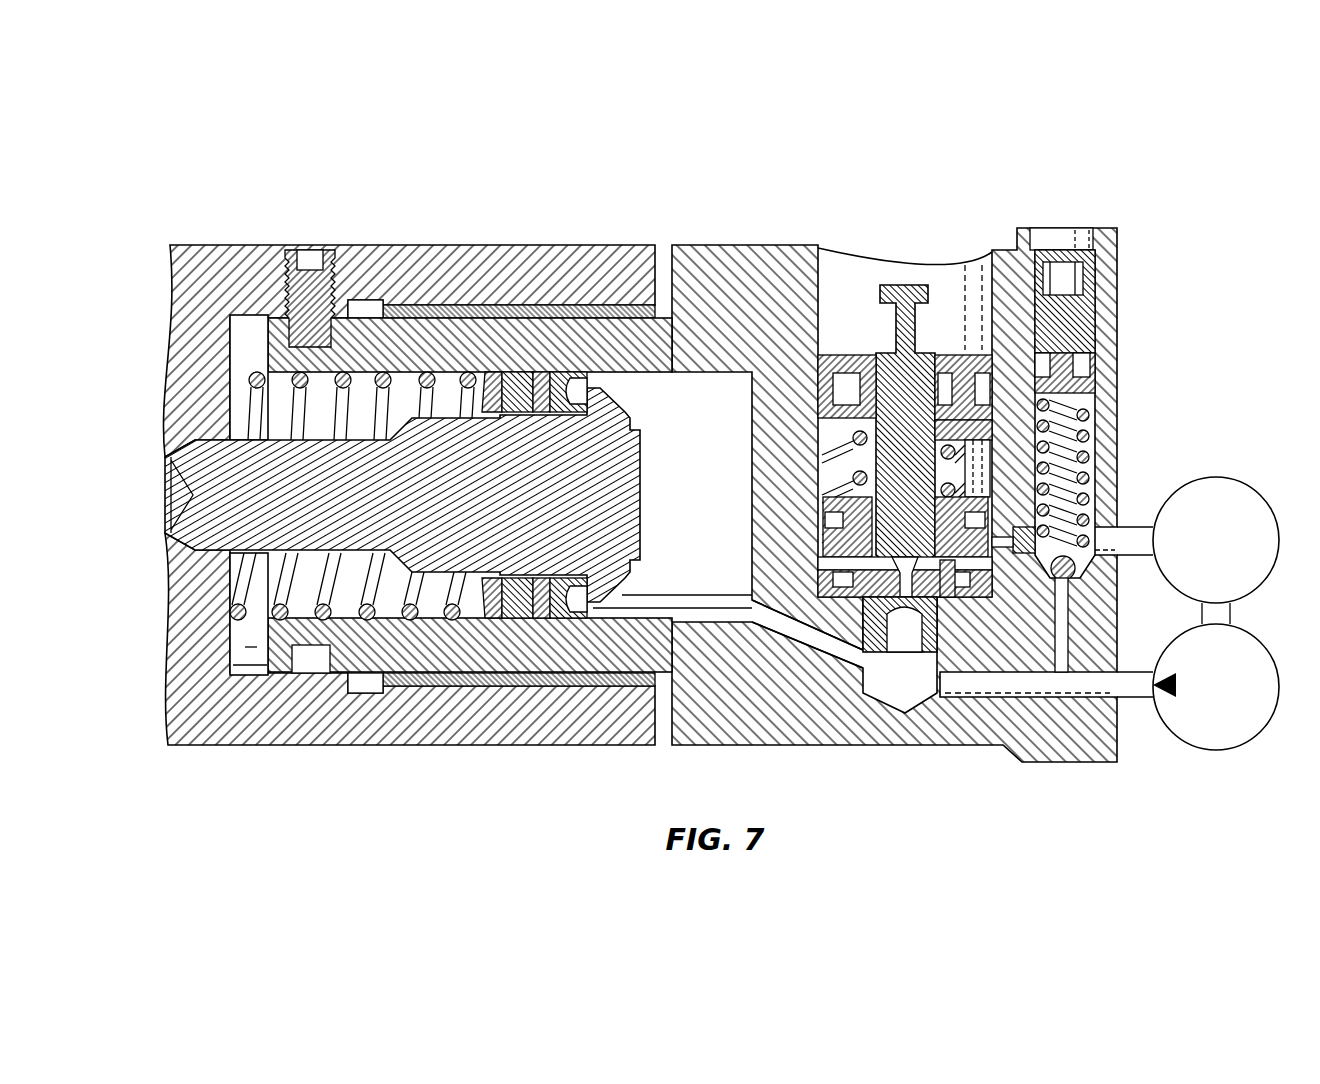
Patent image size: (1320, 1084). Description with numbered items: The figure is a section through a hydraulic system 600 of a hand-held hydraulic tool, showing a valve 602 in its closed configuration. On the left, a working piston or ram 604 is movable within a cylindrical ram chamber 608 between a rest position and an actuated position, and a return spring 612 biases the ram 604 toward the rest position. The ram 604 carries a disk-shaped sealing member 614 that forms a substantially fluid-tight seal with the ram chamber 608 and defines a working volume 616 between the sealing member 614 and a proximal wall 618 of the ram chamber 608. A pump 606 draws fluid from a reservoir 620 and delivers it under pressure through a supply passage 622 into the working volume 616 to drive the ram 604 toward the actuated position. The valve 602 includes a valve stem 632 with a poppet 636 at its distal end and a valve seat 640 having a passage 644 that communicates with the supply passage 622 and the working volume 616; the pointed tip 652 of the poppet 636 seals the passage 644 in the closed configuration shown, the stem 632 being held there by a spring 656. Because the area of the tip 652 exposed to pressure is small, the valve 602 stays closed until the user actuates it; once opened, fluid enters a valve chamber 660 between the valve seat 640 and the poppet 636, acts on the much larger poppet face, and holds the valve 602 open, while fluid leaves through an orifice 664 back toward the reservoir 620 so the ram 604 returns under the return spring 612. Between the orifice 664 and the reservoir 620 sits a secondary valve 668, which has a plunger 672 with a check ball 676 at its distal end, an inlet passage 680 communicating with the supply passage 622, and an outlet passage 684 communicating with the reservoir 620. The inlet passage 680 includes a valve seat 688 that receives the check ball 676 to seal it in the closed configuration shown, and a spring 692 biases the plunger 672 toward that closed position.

The hydraulic system 600 is at (338, 186).
The valve 602 is at (797, 377).
The ram 604 is at (228, 528).
The pump 606 is at (1240, 748).
The ram chamber 608 is at (337, 612).
The return spring 612 is at (283, 590).
The sealing member 614 is at (562, 372).
The working volume 616 is at (653, 690).
The proximal wall 618 is at (679, 590).
The reservoir 620 is at (1250, 479).
The supply passage 622 is at (800, 655).
The valve stem 632 is at (920, 353).
The poppet 636 is at (850, 527).
The valve seat 640 is at (955, 600).
The passage 644 is at (932, 660).
The pointed tip 652 is at (893, 563).
The spring 656 is at (858, 475).
The valve chamber 660 is at (968, 575).
The orifice 664 is at (1000, 530).
The secondary valve 668 is at (1095, 350).
The plunger 672 is at (1030, 537).
The check ball 676 is at (1069, 592).
The inlet passage 680 is at (1118, 735).
The outlet passage 684 is at (1122, 527).
The valve seat 688 is at (1087, 566).
The spring 692 is at (1090, 412).